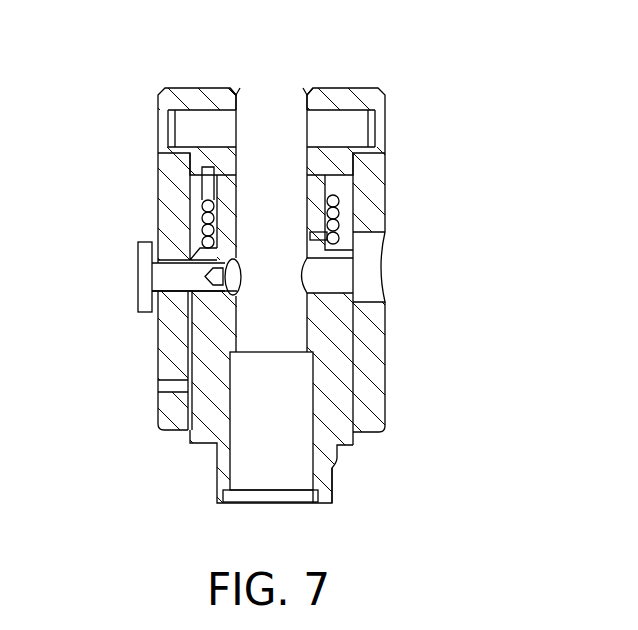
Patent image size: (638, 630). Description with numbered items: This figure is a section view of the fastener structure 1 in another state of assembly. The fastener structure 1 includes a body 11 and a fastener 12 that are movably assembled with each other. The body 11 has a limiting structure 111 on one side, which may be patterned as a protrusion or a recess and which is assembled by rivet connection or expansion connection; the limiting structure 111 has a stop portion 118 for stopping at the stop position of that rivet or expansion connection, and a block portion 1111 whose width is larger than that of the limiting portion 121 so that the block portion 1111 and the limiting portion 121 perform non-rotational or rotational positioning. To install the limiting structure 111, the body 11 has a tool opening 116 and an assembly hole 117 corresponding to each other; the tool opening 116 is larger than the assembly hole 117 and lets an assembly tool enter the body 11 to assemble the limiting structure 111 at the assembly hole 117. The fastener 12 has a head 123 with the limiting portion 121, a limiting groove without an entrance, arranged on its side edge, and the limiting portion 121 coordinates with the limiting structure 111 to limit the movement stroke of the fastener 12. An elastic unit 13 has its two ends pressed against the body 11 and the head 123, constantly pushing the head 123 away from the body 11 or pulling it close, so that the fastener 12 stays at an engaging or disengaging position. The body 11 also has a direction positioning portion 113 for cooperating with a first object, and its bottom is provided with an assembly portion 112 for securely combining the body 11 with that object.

The fastener structure 1 is at (146, 38).
The body 11 is at (355, 380).
The fastener 12 is at (384, 78).
The elastic unit 13 is at (339, 212).
The limiting structure 111 is at (132, 290).
The assembly portion 112 is at (335, 468).
The direction positioning portion 113 is at (214, 470).
The tool opening 116 is at (338, 277).
The assembly hole 117 is at (208, 292).
The stop portion 118 is at (207, 262).
The limiting portion 121 is at (176, 354).
The head 123 is at (328, 87).
The block portion 1111 is at (145, 262).